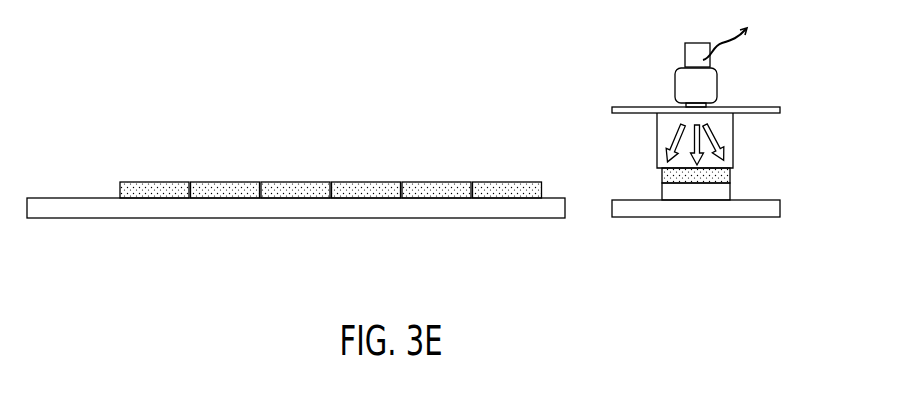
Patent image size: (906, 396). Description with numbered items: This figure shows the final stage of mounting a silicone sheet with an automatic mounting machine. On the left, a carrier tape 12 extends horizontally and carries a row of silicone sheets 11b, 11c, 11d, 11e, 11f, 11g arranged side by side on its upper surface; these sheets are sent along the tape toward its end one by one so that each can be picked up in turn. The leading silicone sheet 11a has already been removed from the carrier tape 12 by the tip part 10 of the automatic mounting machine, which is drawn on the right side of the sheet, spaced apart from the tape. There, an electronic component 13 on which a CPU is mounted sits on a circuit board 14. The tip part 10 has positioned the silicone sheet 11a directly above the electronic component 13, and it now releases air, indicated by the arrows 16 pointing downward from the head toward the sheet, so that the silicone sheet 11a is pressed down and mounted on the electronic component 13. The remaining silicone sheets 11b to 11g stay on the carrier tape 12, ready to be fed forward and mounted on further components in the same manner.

The tip part 10 is at (610, 33).
The silicone sheet 11a is at (661, 176).
The silicone sheet 11b is at (154, 185).
The silicone sheet 11c is at (224, 185).
The silicone sheet 11d is at (293, 185).
The silicone sheet 11e is at (363, 185).
The silicone sheet 11f is at (434, 185).
The silicone sheet 11g is at (506, 185).
The carrier tape 12 is at (297, 207).
The electronic component 13 is at (723, 191).
The circuit board 14 is at (695, 210).
The arrows 16 is at (735, 138).